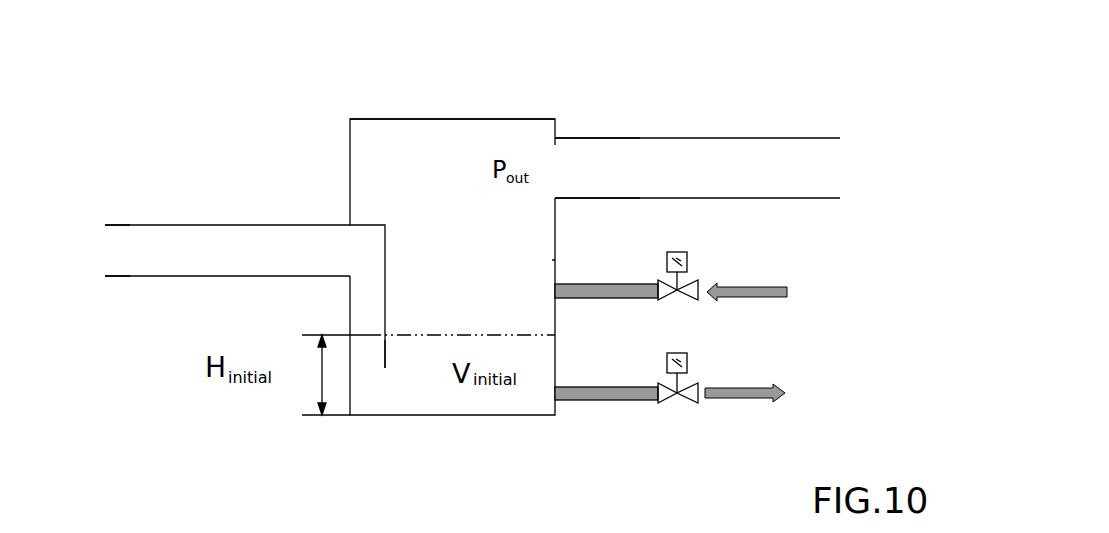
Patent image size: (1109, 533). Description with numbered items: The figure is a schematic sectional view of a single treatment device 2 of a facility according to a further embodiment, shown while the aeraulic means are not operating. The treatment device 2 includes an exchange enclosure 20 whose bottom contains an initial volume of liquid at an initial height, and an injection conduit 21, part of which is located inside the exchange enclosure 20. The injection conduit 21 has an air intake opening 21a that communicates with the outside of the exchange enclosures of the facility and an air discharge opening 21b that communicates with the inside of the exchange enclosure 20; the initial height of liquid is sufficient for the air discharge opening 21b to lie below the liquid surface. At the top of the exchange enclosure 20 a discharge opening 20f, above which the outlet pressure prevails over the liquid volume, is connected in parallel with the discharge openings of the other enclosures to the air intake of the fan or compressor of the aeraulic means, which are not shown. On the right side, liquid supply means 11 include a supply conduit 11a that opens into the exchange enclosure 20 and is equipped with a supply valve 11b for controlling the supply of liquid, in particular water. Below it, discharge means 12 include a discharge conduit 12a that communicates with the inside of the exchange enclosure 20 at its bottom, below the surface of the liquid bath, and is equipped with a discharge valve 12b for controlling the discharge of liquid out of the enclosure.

The treatment device 2 is at (560, 73).
The exchange enclosure 20 is at (480, 252).
The discharge opening 20f is at (542, 167).
The injection conduit 21 is at (252, 238).
The air intake opening 21a is at (120, 255).
The air discharge opening 21b is at (403, 385).
The liquid supply means 11 is at (736, 269).
The supply conduit 11a is at (588, 298).
The supply valve 11b is at (662, 293).
The discharge means 12 is at (726, 413).
The discharge conduit 12a is at (587, 398).
The discharge valve 12b is at (663, 397).